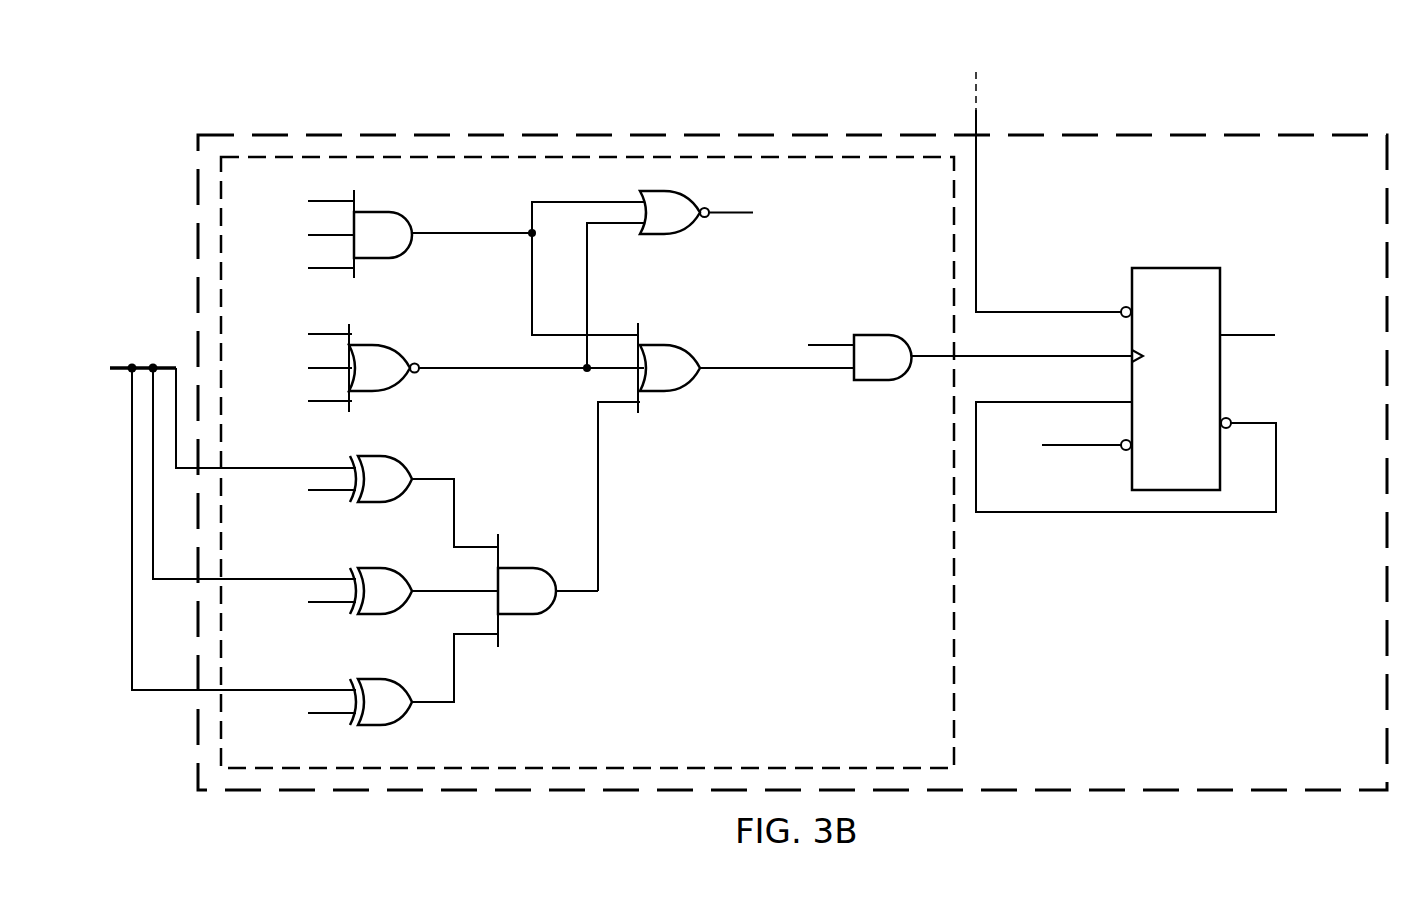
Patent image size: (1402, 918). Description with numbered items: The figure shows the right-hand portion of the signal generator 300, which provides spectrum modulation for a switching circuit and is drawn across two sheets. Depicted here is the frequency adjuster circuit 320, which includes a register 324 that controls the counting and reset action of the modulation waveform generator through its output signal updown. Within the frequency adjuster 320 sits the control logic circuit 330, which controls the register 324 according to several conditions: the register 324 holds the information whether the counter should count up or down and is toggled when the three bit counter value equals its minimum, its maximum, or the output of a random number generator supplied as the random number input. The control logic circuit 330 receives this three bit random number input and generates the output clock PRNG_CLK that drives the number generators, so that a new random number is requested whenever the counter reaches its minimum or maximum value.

The signal generator 300 is at (304, 88).
The frequency adjuster circuit 320 is at (1192, 698).
The register 324 is at (1197, 414).
The control logic circuit 330 is at (797, 640).